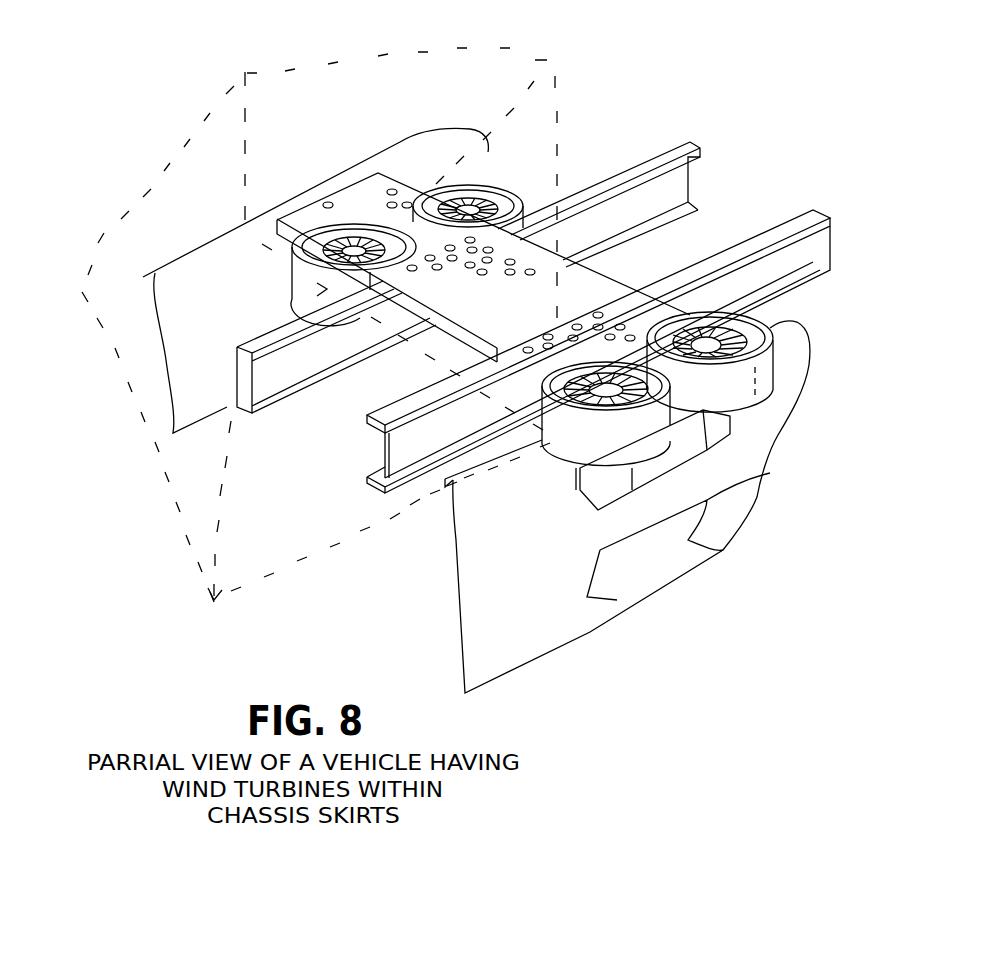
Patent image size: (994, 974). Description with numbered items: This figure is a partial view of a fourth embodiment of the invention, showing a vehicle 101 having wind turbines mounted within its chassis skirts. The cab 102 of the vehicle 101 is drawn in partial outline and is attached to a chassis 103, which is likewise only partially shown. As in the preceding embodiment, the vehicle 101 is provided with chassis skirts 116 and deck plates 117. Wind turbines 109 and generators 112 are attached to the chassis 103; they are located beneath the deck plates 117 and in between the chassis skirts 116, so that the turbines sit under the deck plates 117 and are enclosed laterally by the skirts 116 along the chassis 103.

The vehicle 101 is at (118, 214).
The cab 102 is at (303, 133).
The chassis 103 is at (688, 190).
The wind turbines 109 is at (360, 222).
The generators 112 is at (617, 494).
The chassis skirts 116 is at (550, 605).
The deck plates 117 is at (563, 294).